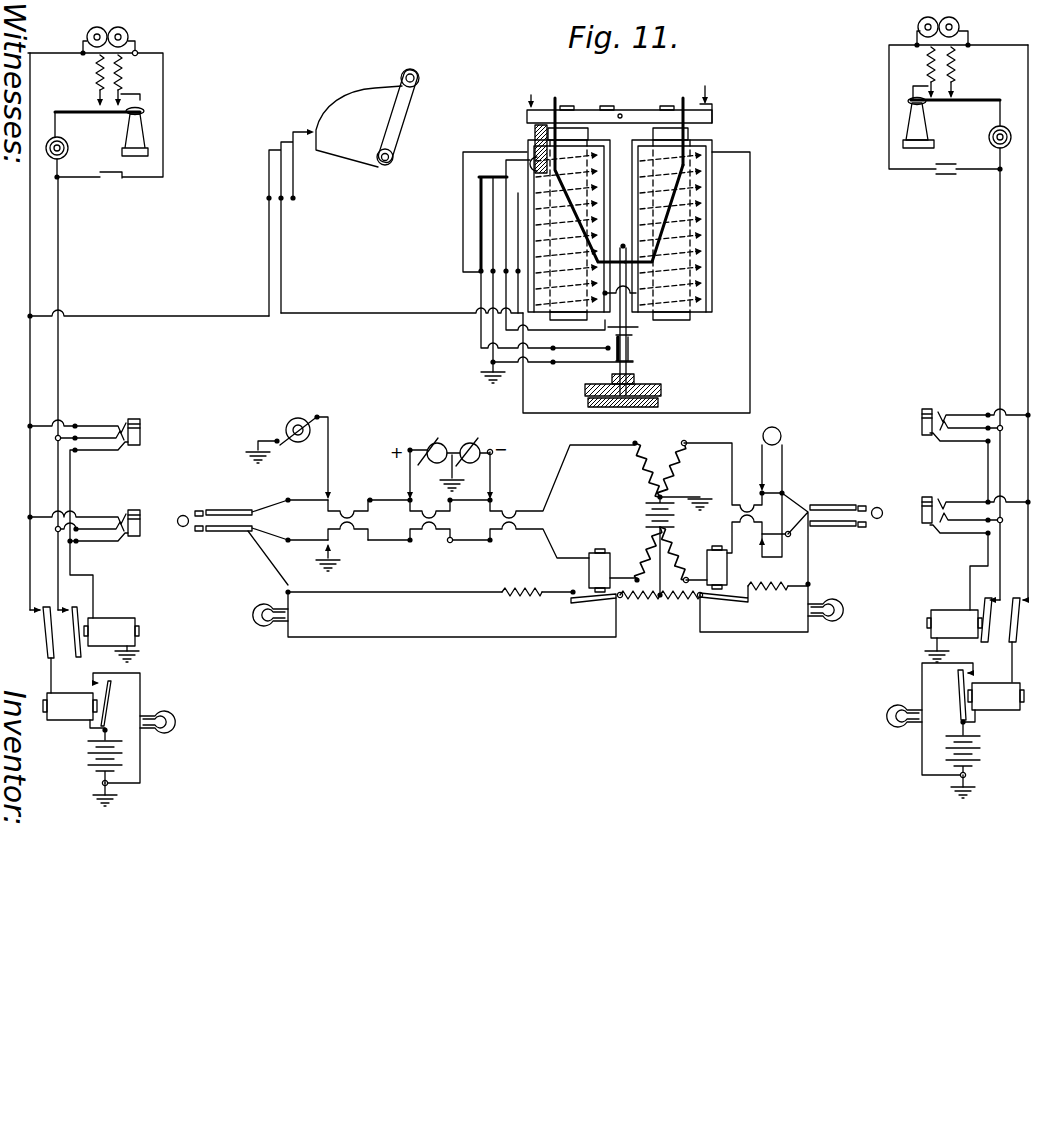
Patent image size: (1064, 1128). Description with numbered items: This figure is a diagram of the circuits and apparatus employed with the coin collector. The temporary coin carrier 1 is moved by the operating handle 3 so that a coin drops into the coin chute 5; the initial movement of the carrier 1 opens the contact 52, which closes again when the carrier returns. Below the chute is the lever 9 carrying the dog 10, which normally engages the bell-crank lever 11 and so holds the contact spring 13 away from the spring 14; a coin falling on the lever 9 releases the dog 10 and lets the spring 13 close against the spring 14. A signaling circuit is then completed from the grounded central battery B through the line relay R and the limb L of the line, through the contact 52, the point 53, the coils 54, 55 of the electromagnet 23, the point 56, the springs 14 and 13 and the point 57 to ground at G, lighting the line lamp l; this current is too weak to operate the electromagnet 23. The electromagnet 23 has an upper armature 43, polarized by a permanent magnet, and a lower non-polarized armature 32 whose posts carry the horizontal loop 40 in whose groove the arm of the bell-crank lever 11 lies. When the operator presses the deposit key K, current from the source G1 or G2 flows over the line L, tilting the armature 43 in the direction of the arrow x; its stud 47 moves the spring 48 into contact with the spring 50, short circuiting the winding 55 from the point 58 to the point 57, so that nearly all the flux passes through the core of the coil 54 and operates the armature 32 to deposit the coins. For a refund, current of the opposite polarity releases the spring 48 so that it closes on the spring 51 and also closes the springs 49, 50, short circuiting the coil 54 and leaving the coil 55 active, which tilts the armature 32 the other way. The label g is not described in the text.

The temporary coin carrier 1 is at (355, 106).
The operating handle 3 is at (394, 120).
The contact 52 is at (279, 138).
The stud 47 is at (535, 134).
The contact spring 51 is at (528, 165).
The contact spring 50 is at (494, 190).
The contact spring 49 is at (484, 203).
The contact spring 48 is at (505, 225).
The point 56 is at (478, 276).
The point 53 is at (516, 316).
The point 57 is at (490, 362).
The contact spring 14 is at (559, 311).
The contact spring 13 is at (600, 365).
The dog 10 is at (633, 338).
The coin chute 5 is at (655, 386).
The lever 9 is at (660, 394).
The bell-crank lever 11 is at (619, 311).
The point 58 is at (604, 294).
The coil 55 is at (600, 206).
The coil 54 is at (696, 225).
The loop 40 is at (686, 150).
The electromagnet 23 is at (704, 312).
The upper armature 43 is at (713, 108).
The armature 32 is at (645, 100).
The arrow x is at (701, 84).
The direction arrow g is at (520, 97).
The limb of the line L is at (30, 488).
The line relay R is at (70, 689).
The central battery B is at (92, 757).
The line lamp l is at (178, 720).
The ground G is at (493, 401).
The generator G1 is at (482, 442).
The generator G2 is at (441, 442).
The deposit key K is at (461, 501).